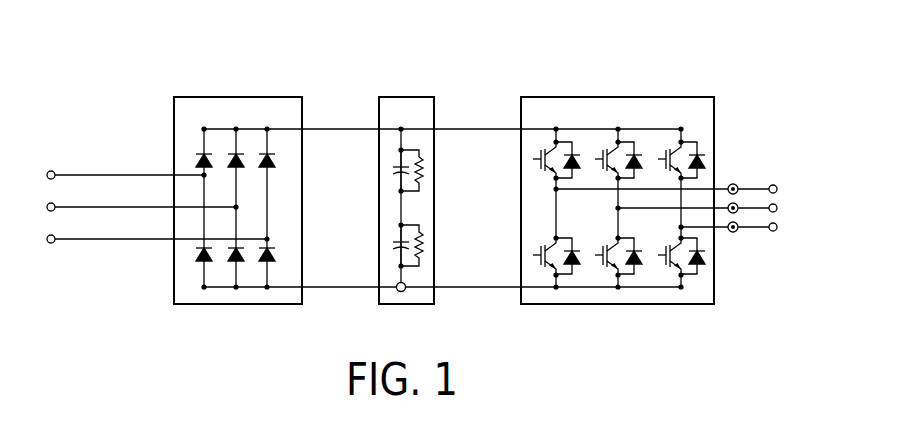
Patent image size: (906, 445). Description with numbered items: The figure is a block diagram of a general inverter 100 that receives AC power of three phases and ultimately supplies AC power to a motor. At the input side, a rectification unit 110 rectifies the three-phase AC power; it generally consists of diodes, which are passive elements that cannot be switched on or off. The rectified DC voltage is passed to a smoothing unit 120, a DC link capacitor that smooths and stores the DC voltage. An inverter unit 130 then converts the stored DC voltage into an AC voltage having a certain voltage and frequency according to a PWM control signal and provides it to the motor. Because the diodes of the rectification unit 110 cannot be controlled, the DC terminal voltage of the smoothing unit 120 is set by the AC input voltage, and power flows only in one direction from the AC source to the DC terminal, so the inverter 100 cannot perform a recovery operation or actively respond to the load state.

The inverter 100 is at (673, 43).
The rectification unit 110 is at (235, 97).
The smoothing unit 120 is at (405, 97).
The inverter unit 130 is at (615, 97).